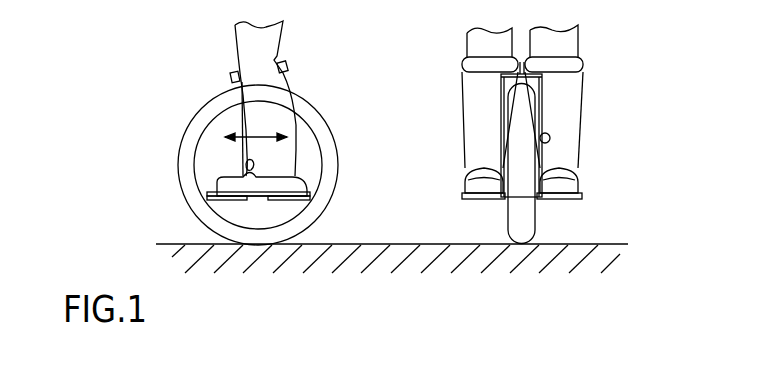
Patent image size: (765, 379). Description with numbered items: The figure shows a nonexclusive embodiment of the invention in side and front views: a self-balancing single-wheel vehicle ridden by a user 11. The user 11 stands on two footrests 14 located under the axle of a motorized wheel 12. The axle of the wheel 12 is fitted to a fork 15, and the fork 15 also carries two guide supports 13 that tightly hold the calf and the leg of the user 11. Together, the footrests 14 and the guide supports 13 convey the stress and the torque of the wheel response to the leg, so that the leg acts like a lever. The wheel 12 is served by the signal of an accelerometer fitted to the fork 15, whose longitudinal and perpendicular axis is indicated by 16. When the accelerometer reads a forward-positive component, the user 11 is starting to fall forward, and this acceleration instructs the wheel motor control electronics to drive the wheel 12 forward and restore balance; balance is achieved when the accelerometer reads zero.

The user 11 is at (243, 42).
The motorized wheel 12 is at (195, 115).
The guide supports 13 is at (233, 78).
The footrests 14 is at (222, 199).
The fork 15 is at (250, 164).
The longitudinal and perpendicular axis of the accelerometer 16 is at (244, 152).